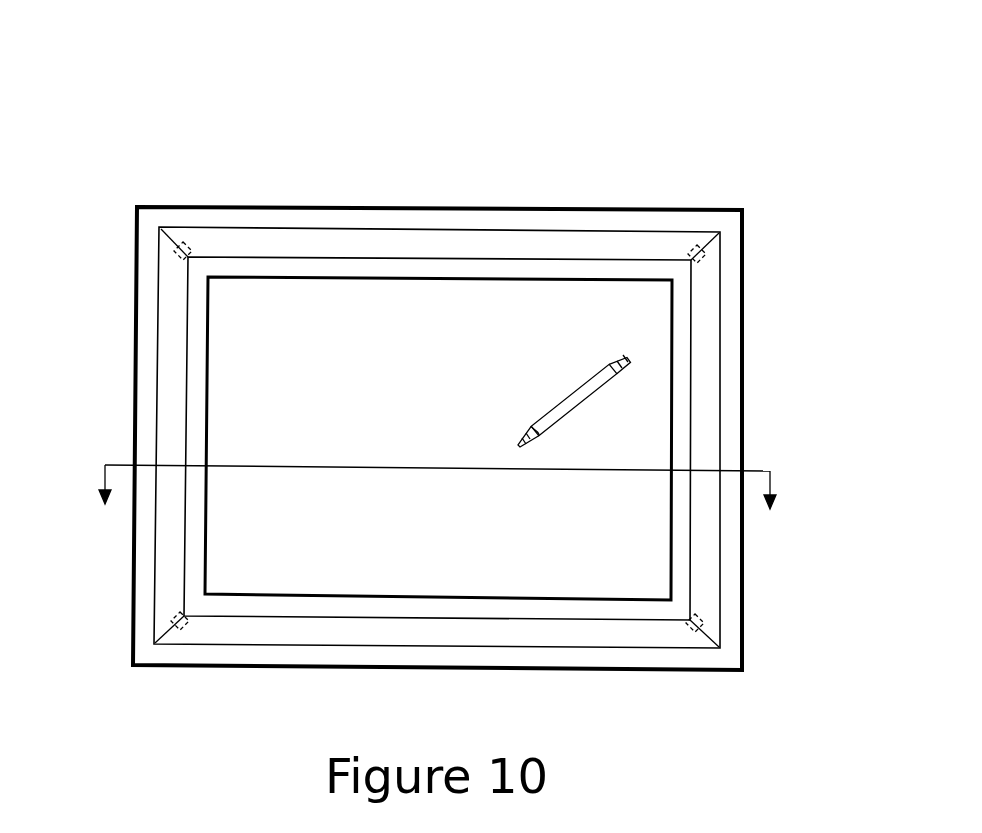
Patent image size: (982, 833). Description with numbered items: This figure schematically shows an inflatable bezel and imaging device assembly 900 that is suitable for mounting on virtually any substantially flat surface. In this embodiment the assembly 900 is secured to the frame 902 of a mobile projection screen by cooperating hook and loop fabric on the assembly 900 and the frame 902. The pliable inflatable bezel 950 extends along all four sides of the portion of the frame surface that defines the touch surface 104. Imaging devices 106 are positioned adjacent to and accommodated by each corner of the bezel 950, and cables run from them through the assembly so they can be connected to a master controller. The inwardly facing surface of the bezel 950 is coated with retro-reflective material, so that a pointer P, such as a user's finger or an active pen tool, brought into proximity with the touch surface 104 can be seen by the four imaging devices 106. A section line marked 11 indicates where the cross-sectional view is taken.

The inflatable bezel and imaging device assembly 900 is at (621, 158).
The frame 902 is at (147, 428).
The inflatable bezel 950 is at (175, 583).
The touch surface 104 is at (438, 438).
The imaging devices 106 is at (180, 250).
The pointer P is at (590, 387).
The section line 11- 11 is at (440, 506).